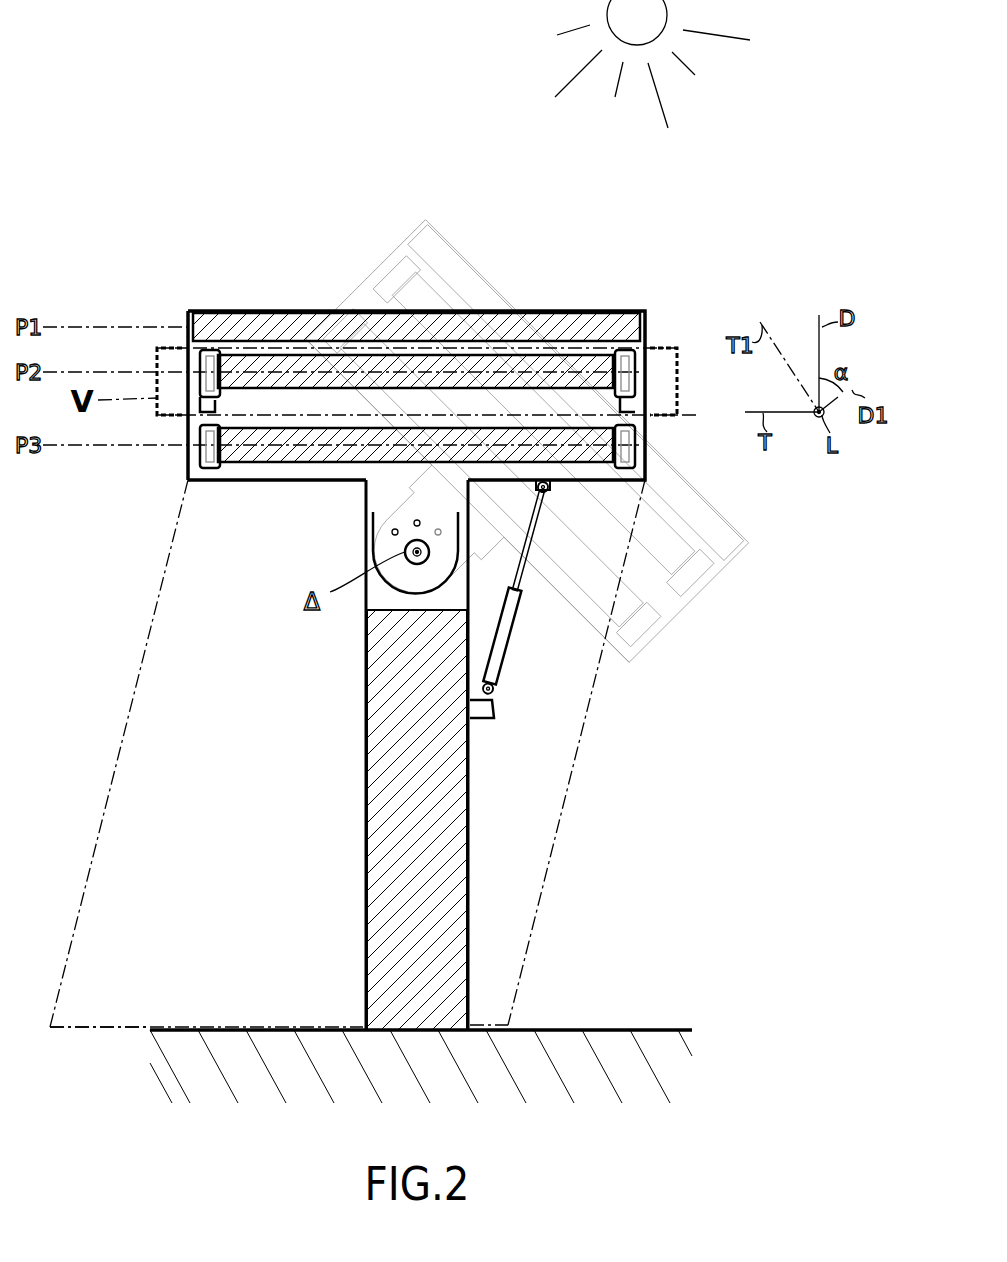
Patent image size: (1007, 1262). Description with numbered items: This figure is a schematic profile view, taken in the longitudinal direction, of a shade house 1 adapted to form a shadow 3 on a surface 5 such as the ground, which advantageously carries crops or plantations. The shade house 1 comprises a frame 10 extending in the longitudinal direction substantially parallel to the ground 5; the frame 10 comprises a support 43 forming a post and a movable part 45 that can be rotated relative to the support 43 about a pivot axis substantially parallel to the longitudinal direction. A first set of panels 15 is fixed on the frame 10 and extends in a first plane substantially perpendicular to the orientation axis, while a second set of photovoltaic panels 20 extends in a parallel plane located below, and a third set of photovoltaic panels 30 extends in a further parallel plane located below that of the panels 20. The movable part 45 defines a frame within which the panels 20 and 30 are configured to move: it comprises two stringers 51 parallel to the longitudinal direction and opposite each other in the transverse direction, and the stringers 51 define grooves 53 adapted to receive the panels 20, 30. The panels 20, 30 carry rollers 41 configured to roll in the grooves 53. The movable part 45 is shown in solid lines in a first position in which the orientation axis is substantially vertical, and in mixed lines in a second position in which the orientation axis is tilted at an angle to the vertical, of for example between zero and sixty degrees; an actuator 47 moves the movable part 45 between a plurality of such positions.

The shade house 1 is at (160, 228).
The shadow 3 is at (167, 1025).
The surface 5 is at (421, 1066).
The frame 10 is at (447, 827).
The panels of the first set 15 is at (302, 332).
The photovoltaic panels of the second set 20 is at (277, 373).
The photovoltaic panels of the third set 30 is at (238, 452).
The rollers 41 is at (205, 360).
The support 43 is at (380, 710).
The movable part 45 is at (380, 493).
The actuator 47 is at (502, 638).
The stringers 51 is at (190, 437).
The grooves 53 is at (210, 413).